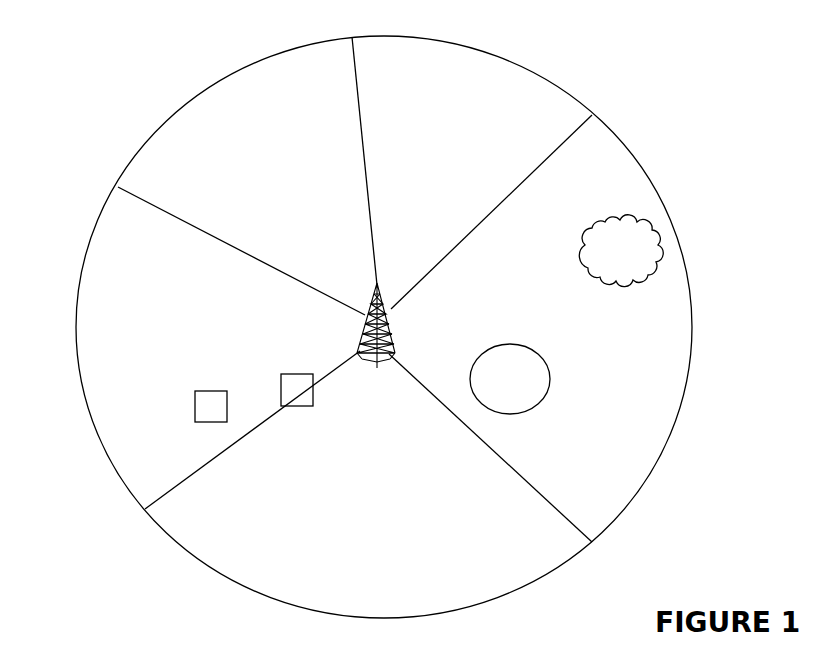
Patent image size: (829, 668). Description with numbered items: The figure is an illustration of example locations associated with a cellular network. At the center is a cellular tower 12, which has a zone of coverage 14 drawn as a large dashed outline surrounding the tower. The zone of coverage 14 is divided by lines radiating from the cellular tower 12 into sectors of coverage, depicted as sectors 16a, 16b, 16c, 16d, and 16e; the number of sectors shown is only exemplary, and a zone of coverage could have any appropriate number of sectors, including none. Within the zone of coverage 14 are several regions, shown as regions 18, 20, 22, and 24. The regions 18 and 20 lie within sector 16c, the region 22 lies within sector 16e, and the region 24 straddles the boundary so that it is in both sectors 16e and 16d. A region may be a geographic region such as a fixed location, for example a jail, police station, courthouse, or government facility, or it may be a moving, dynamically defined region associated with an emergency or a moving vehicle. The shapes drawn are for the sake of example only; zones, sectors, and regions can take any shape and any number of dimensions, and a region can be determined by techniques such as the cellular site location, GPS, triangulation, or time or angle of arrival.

The cellular tower 12 is at (369, 288).
The zone of coverage 14 is at (131, 161).
The sector 16a is at (233, 88).
The sector 16b is at (502, 75).
The sector 16c is at (670, 296).
The sector 16d is at (200, 548).
The sector 16e is at (98, 406).
The region 18 is at (583, 252).
The region 20 is at (550, 381).
The region 22 is at (202, 392).
The region 24 is at (306, 405).